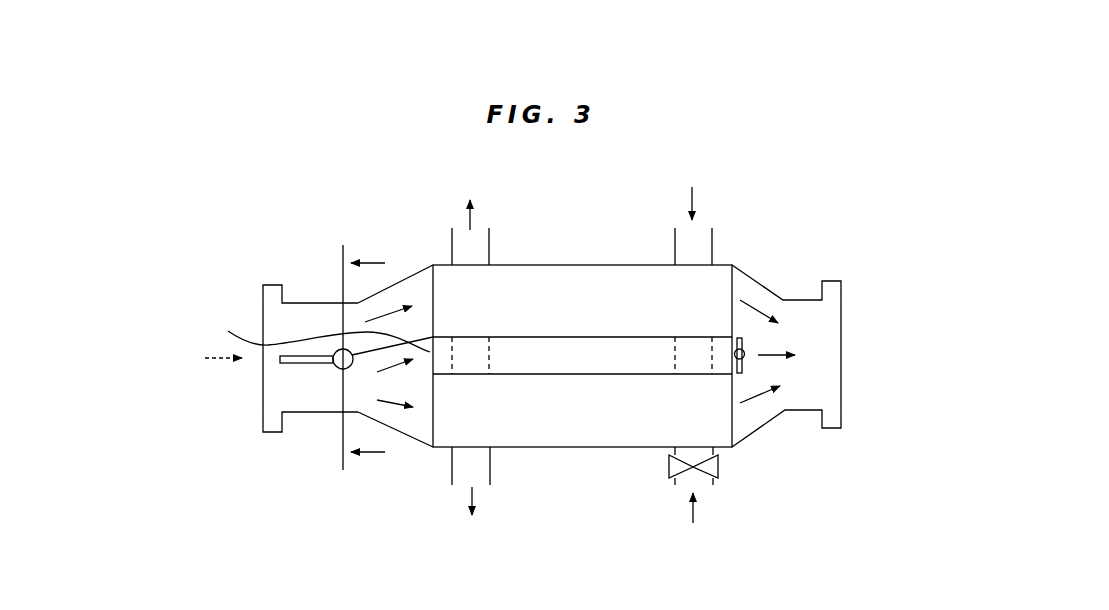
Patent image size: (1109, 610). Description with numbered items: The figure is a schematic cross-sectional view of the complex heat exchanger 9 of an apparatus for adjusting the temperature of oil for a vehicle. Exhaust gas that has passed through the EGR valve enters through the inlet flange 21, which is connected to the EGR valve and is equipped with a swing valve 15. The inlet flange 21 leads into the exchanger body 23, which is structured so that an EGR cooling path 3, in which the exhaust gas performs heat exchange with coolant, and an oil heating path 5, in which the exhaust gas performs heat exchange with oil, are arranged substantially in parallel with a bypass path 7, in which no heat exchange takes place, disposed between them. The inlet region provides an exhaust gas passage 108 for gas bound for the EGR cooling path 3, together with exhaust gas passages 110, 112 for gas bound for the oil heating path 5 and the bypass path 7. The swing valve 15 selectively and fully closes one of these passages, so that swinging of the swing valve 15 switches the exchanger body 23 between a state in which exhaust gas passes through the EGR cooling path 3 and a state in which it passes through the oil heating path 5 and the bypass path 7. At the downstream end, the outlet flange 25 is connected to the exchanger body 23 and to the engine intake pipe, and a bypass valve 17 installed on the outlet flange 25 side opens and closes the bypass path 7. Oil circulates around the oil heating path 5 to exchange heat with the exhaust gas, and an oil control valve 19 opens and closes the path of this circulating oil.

The EGR cooling path 3 is at (521, 304).
The oil heating path 5 is at (583, 416).
The bypass path 7 is at (632, 355).
The complex heat exchanger 9 is at (427, 246).
The swing valve 15 is at (312, 362).
The bypass valve 17 is at (743, 367).
The oil control valve 19 is at (720, 463).
The inlet flange 21 is at (308, 302).
The exchanger body 23 is at (577, 265).
The outlet flange 25 is at (747, 273).
The exhaust gas passage 108 is at (415, 283).
The exhaust gas passage 110 is at (417, 430).
The exhaust gas passage 112 is at (307, 335).